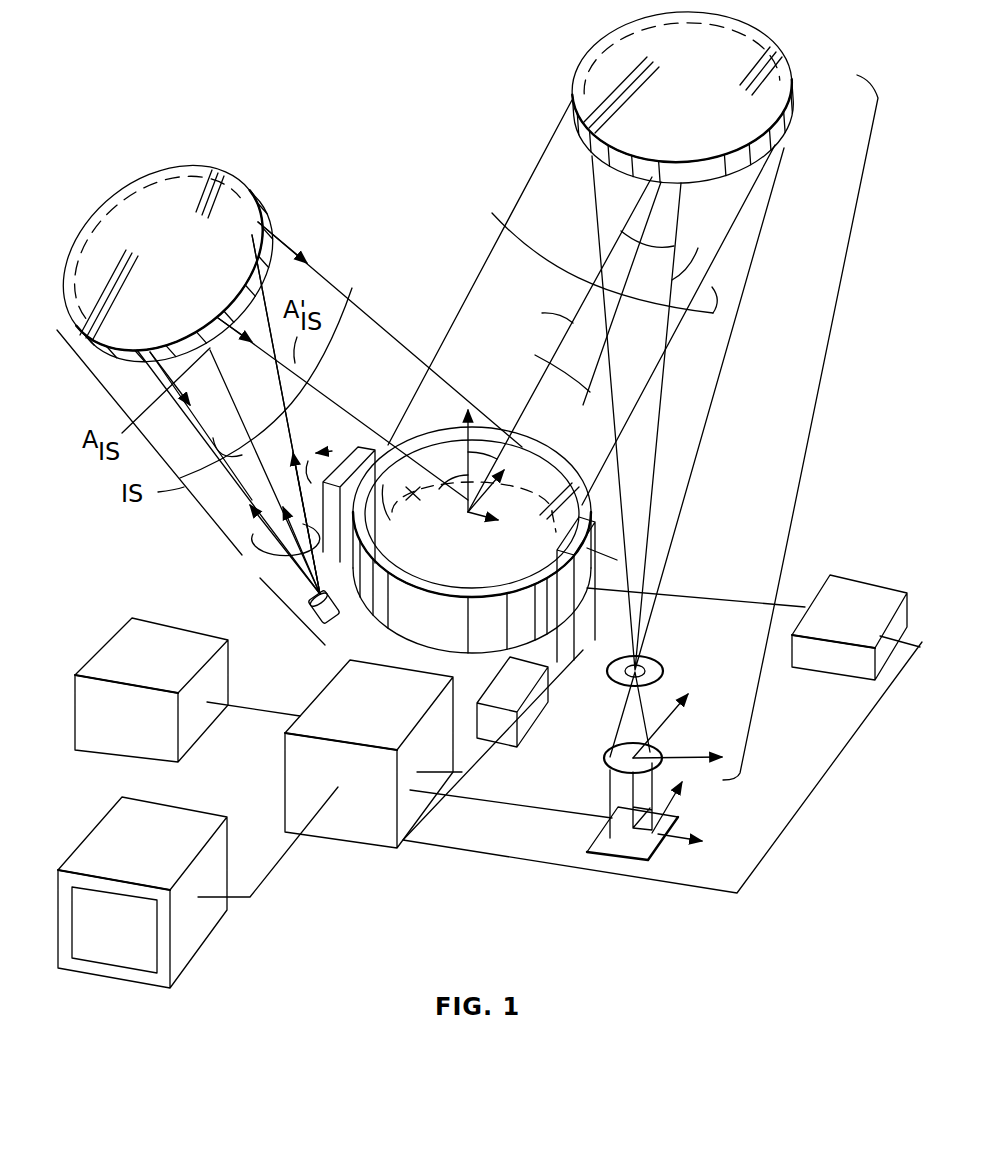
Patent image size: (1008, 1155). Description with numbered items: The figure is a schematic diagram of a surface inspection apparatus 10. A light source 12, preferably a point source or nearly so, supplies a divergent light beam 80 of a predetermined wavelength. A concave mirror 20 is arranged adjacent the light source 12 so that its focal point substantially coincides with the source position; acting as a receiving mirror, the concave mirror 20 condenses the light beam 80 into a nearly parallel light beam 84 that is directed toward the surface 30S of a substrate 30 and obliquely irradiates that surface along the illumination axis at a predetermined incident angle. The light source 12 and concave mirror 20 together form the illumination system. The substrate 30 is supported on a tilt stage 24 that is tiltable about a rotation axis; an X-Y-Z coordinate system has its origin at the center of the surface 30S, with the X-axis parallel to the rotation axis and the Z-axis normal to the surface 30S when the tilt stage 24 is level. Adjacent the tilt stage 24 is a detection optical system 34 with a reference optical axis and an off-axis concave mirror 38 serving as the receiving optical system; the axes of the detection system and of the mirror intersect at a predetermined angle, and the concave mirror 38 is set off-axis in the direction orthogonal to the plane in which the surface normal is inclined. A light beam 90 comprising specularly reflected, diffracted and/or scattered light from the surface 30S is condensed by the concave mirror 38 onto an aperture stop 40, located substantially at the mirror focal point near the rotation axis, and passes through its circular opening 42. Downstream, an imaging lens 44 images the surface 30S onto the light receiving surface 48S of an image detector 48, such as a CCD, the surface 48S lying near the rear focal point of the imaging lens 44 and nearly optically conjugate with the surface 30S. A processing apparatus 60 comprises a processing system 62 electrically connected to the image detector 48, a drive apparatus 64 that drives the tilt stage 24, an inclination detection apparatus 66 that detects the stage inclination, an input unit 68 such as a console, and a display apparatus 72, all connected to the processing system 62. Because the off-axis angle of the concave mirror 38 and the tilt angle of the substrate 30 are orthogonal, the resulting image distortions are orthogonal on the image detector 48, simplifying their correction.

The apparatus 10 is at (415, 104).
The light source 12 is at (330, 628).
The concave mirror 20 is at (179, 178).
The tilt stage 24 is at (407, 620).
The substrate 30 is at (450, 515).
The surface 30S is at (427, 425).
The detection optical system 34 is at (810, 436).
The concave mirror 38 is at (702, 108).
The aperture stop 40 is at (612, 677).
The circular opening 42 is at (640, 669).
The imaging lens 44 is at (610, 755).
The image detector 48 is at (627, 825).
The light receiving surface 48S is at (655, 857).
The processing apparatus 60 is at (358, 920).
The processing system 62 is at (372, 835).
The drive apparatus 64 is at (505, 738).
The inclination detection apparatus 66 is at (850, 588).
The input unit 68 is at (118, 642).
The display apparatus 72 is at (198, 942).
The light beam 80 is at (252, 560).
The light beam 84 is at (349, 287).
The light beam 90 is at (492, 213).